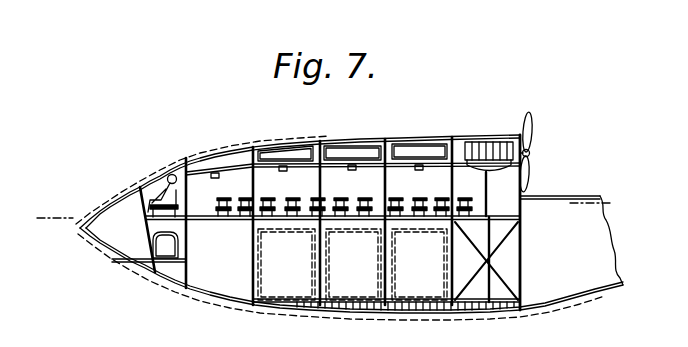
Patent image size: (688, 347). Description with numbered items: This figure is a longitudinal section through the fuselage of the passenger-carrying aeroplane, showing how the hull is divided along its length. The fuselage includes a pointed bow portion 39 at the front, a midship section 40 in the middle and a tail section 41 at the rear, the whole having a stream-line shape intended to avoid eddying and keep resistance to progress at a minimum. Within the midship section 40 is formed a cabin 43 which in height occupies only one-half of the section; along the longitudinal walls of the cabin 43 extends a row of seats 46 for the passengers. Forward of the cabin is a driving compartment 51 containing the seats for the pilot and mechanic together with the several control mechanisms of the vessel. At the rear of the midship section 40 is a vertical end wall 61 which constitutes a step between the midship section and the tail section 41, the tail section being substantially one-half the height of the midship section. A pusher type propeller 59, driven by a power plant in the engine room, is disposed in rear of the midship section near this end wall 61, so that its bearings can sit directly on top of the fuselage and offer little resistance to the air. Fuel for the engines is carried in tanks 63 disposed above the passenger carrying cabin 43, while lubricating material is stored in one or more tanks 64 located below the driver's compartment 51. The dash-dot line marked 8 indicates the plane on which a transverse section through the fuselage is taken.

The section line 8— 8 is at (330, 194).
The bow portion 39 is at (96, 212).
The midship section 40 is at (252, 147).
The tail section 41 is at (549, 196).
The cabin 43 is at (386, 221).
The seats 46 is at (219, 207).
The driving compartment 51 is at (146, 190).
The propeller 59 is at (529, 118).
The vertical end wall 61 is at (521, 170).
The tanks 63 is at (295, 150).
The tanks 64 is at (174, 244).